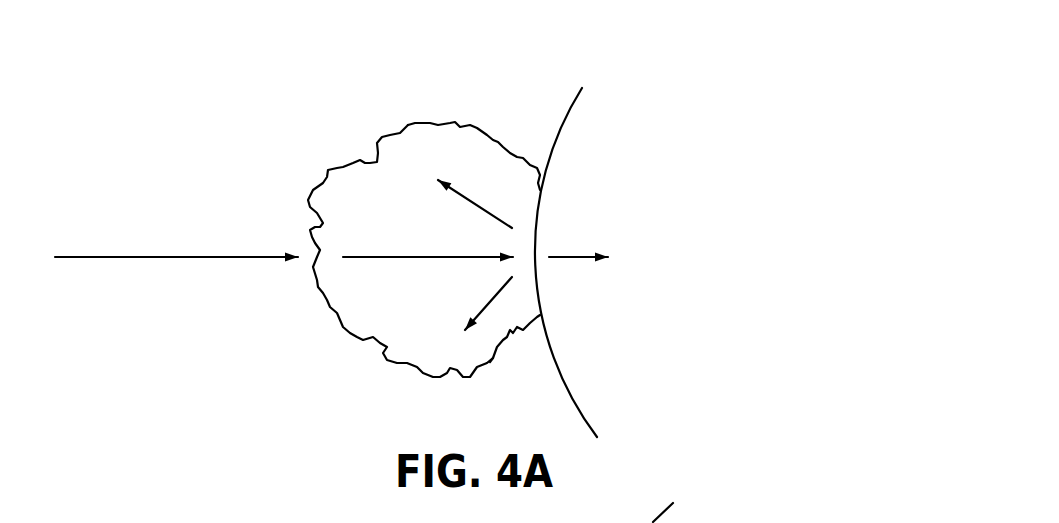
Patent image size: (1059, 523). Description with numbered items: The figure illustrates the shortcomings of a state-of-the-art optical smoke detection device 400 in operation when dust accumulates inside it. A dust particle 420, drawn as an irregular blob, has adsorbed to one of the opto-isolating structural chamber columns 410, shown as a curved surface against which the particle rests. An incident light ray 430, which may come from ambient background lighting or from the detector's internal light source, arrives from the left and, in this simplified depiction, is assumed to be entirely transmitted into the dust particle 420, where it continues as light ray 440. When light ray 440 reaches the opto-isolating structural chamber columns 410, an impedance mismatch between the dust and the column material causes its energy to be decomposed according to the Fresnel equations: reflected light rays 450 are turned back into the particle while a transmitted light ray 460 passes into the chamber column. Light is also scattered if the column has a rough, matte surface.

The optical smoke detection device 400 is at (452, 92).
The opto-isolating structural chamber column 410 is at (612, 98).
The dust particle 420 is at (353, 337).
The incident light ray 430 is at (155, 252).
The light ray 440 is at (405, 247).
The reflected light ray 450 is at (487, 195).
The transmitted light ray 460 is at (577, 263).